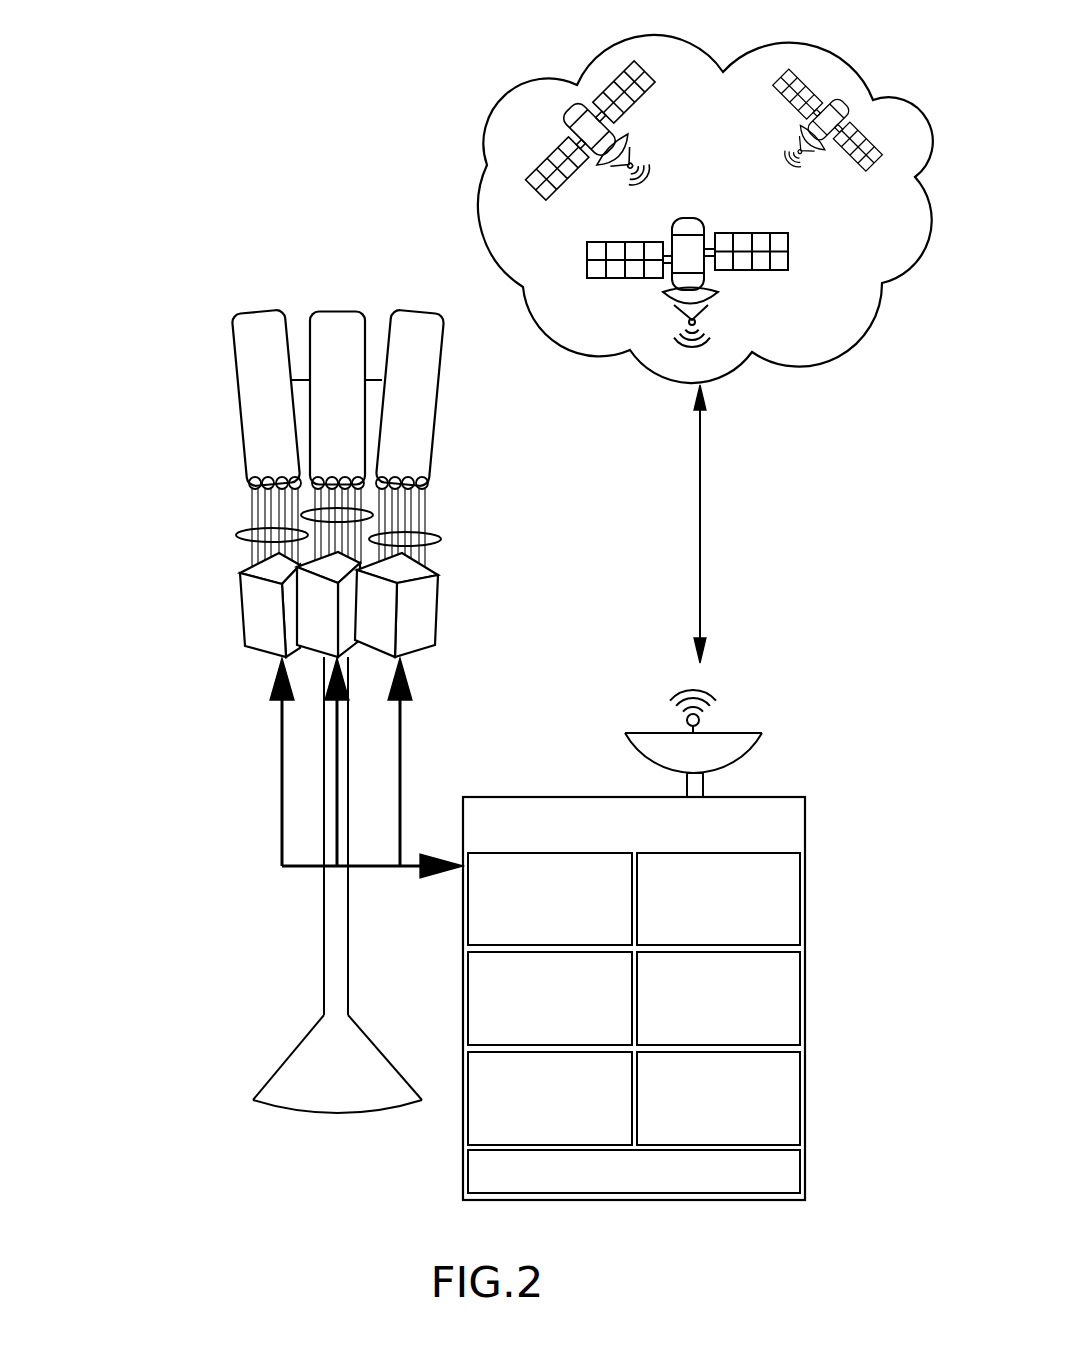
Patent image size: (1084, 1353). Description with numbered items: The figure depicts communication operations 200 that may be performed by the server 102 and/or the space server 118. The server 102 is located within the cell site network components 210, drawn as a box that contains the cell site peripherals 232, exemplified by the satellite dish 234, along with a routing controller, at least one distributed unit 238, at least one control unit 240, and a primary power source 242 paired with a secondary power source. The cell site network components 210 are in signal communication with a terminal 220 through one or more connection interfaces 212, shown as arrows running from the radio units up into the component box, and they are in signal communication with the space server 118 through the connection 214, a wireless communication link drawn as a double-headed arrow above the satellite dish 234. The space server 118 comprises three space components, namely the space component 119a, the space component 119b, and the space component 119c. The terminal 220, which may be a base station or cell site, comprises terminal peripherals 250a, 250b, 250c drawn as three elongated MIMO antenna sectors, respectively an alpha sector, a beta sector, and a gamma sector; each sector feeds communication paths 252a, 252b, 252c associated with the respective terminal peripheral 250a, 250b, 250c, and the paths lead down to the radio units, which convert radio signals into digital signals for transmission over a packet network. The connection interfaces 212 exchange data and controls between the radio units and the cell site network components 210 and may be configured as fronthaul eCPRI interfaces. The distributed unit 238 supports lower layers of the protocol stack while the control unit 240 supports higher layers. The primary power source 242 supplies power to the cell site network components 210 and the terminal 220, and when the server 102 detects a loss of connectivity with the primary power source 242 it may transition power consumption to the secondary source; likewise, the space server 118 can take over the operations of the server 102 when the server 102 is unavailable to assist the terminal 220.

The communication operations 200 is at (252, 120).
The space server 118 is at (496, 128).
The space component 119a is at (640, 107).
The space component 119b is at (860, 157).
The space component 119c is at (743, 263).
The connection 214 is at (700, 453).
The satellite dish 234 is at (743, 737).
The cell site network components 210 is at (725, 847).
The cell site peripherals 232 is at (735, 937).
The distributed unit (DU) 238 is at (531, 1019).
The control unit (CU) 240 is at (700, 1019).
The primary power source 242 is at (781, 1134).
The server 102 is at (696, 1182).
The terminal 220 is at (292, 1068).
The connection interfaces 212 is at (282, 805).
The terminal peripheral 250a is at (247, 535).
The terminal peripheral 250b is at (453, 490).
The terminal peripheral 250c is at (440, 539).
The communication paths 252a is at (253, 622).
The communication paths 252b is at (345, 628).
The communication paths 252c is at (418, 637).